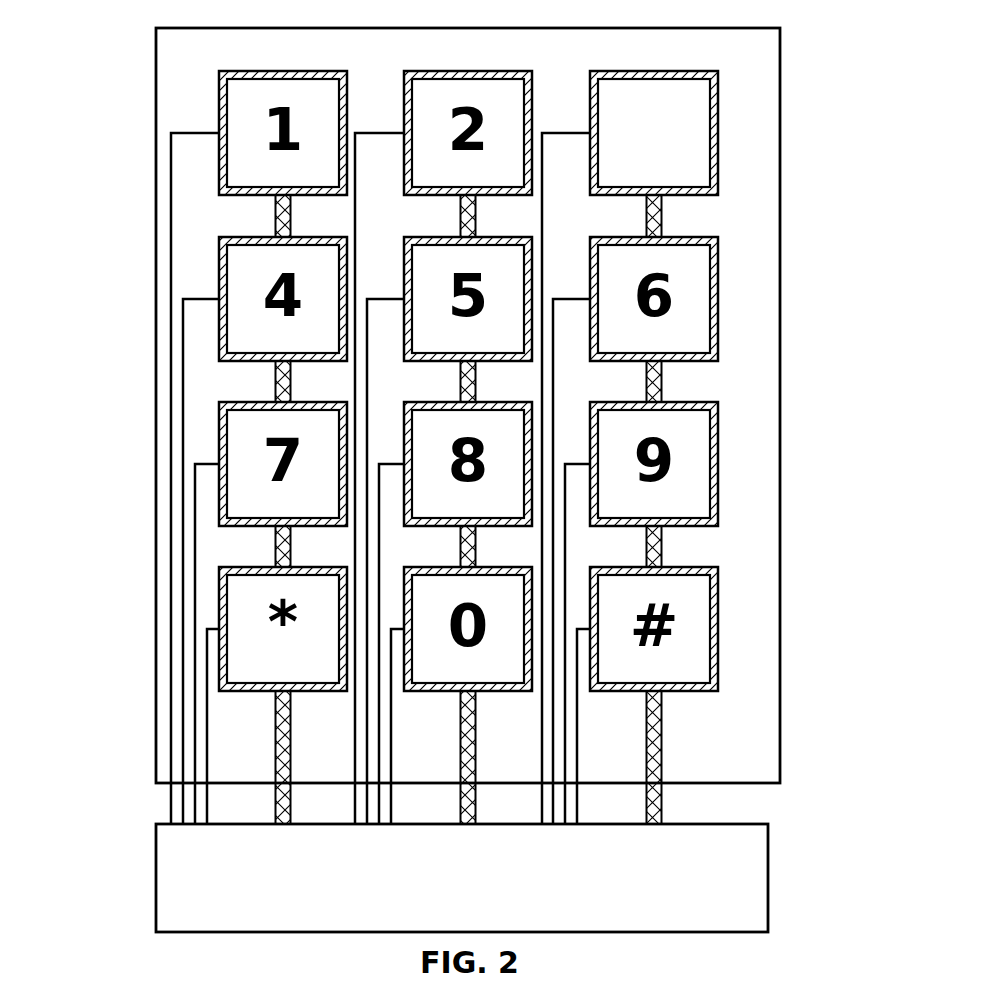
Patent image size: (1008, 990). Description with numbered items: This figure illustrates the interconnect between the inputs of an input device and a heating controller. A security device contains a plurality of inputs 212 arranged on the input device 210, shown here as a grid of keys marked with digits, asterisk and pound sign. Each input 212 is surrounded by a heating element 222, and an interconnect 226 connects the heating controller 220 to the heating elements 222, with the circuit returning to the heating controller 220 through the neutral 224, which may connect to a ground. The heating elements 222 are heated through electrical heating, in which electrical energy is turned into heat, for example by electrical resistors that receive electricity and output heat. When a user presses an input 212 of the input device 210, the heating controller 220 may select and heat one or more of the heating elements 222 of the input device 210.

The input device 210 is at (737, 267).
The input 212 is at (735, 133).
The heating element 222 is at (717, 145).
The neutral 224 is at (662, 808).
The interconnect 226 is at (168, 810).
The heating controller 220 is at (462, 878).